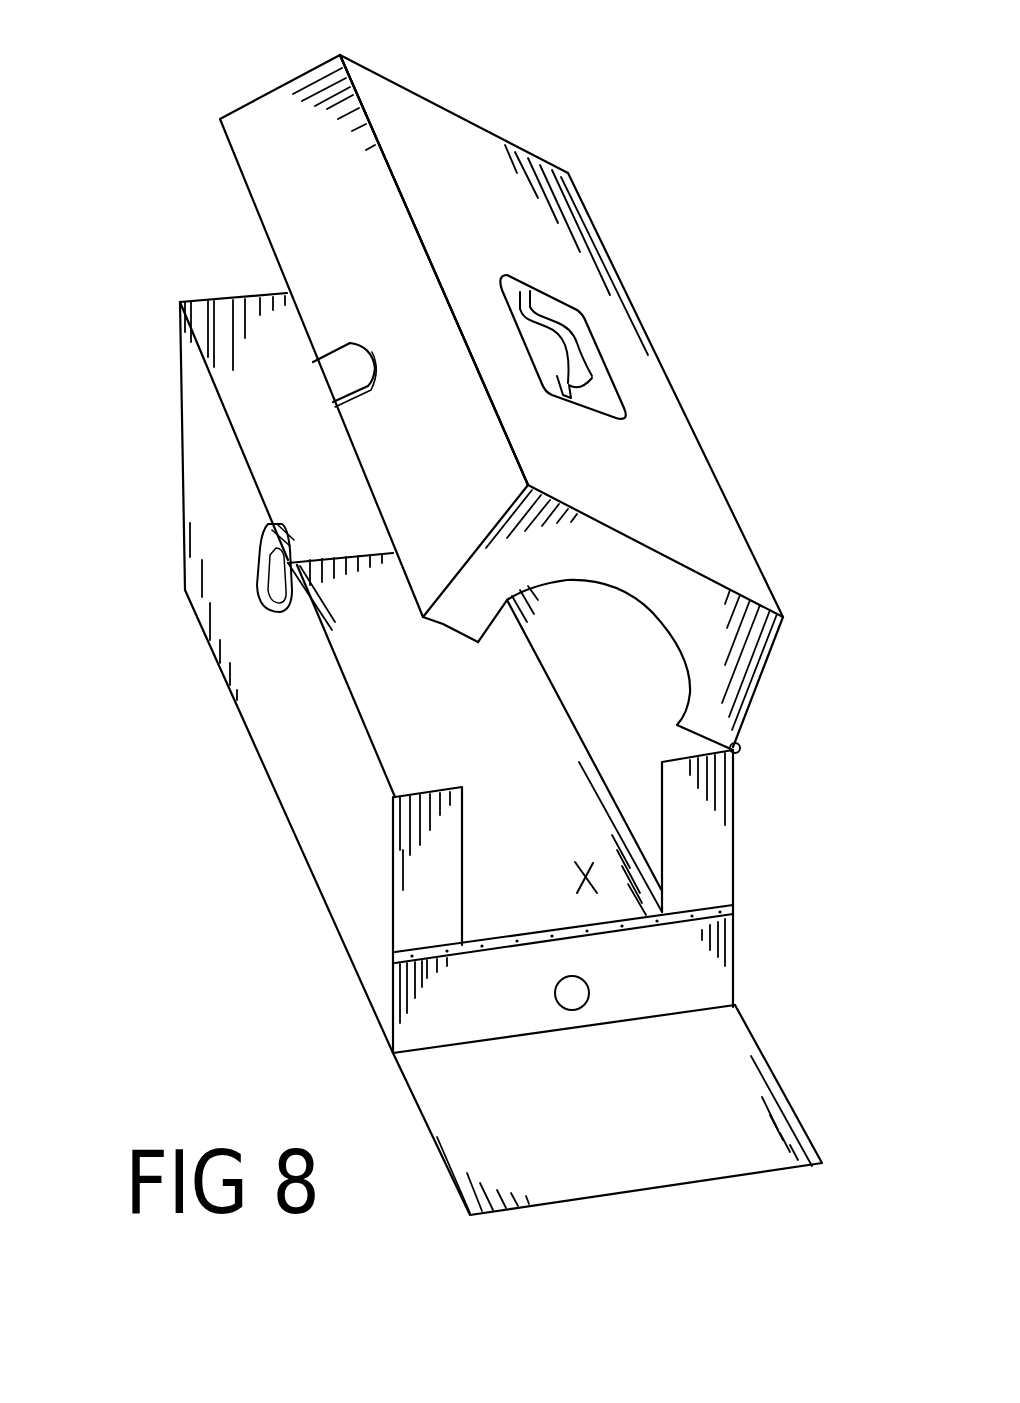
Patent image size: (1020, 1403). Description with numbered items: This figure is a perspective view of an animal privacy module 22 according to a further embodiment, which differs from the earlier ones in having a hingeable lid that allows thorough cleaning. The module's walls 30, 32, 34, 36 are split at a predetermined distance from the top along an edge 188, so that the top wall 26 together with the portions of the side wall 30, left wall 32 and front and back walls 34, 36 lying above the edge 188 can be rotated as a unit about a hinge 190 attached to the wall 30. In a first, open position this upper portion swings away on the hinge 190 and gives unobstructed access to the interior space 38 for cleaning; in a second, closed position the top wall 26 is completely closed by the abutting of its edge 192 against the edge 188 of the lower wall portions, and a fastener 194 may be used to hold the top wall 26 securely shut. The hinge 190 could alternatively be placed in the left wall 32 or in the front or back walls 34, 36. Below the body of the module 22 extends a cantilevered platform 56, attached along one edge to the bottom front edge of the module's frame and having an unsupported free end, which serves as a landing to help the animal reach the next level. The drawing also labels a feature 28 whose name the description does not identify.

The animal privacy module 22 is at (660, 245).
The top wall 26 is at (443, 160).
The front panel 28 is at (580, 850).
The side wall 30 is at (605, 665).
The left wall 32 is at (258, 668).
The front wall 34 is at (425, 888).
The back wall 36 is at (374, 336).
The interior space 38 is at (594, 618).
The cantilevered platform 56 is at (718, 1103).
The edge 188 is at (218, 297).
The hinge 190 is at (740, 746).
The edge 192 is at (237, 168).
The fastener 194 is at (256, 582).